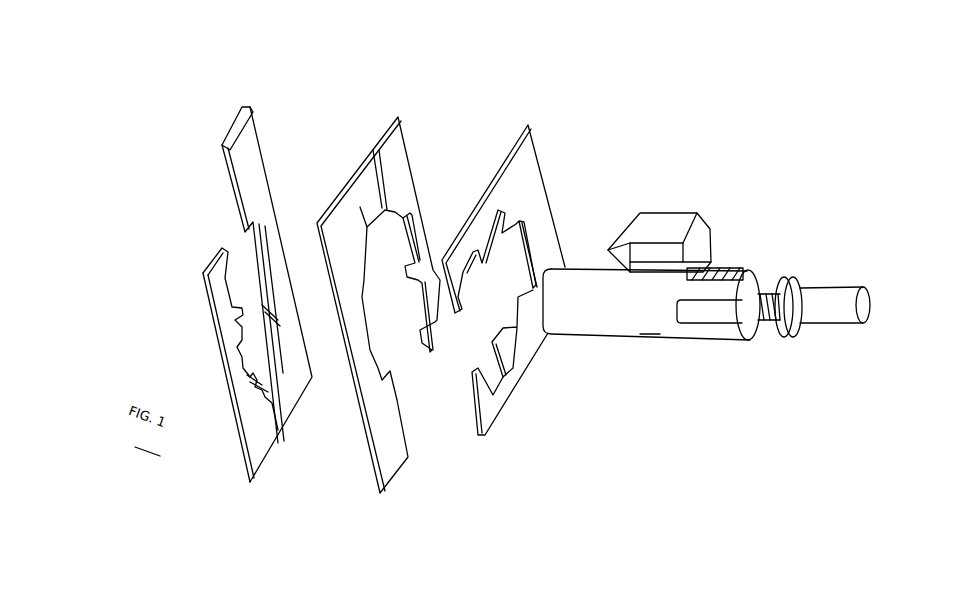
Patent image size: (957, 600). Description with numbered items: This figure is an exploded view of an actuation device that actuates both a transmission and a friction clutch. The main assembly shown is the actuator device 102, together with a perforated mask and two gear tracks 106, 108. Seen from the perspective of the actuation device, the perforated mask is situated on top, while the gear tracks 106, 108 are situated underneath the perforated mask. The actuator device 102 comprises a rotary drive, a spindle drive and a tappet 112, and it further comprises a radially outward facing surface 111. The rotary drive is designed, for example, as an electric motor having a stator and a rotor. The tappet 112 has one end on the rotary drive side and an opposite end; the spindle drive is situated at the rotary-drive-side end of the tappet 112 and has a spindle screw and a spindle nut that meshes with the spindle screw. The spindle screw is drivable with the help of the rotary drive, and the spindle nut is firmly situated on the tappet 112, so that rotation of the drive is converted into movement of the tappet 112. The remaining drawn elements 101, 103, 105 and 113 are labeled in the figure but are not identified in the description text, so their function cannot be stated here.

The third plate 101 is at (513, 157).
The actuator device 102 is at (723, 343).
The hex nut 103 is at (598, 182).
The first plate 105 is at (242, 180).
The gear track 106 is at (387, 140).
The gear track 108 is at (843, 290).
The radially outward facing surface 111 is at (649, 338).
The tappet 112 is at (618, 325).
The threaded bolt 113 is at (772, 290).